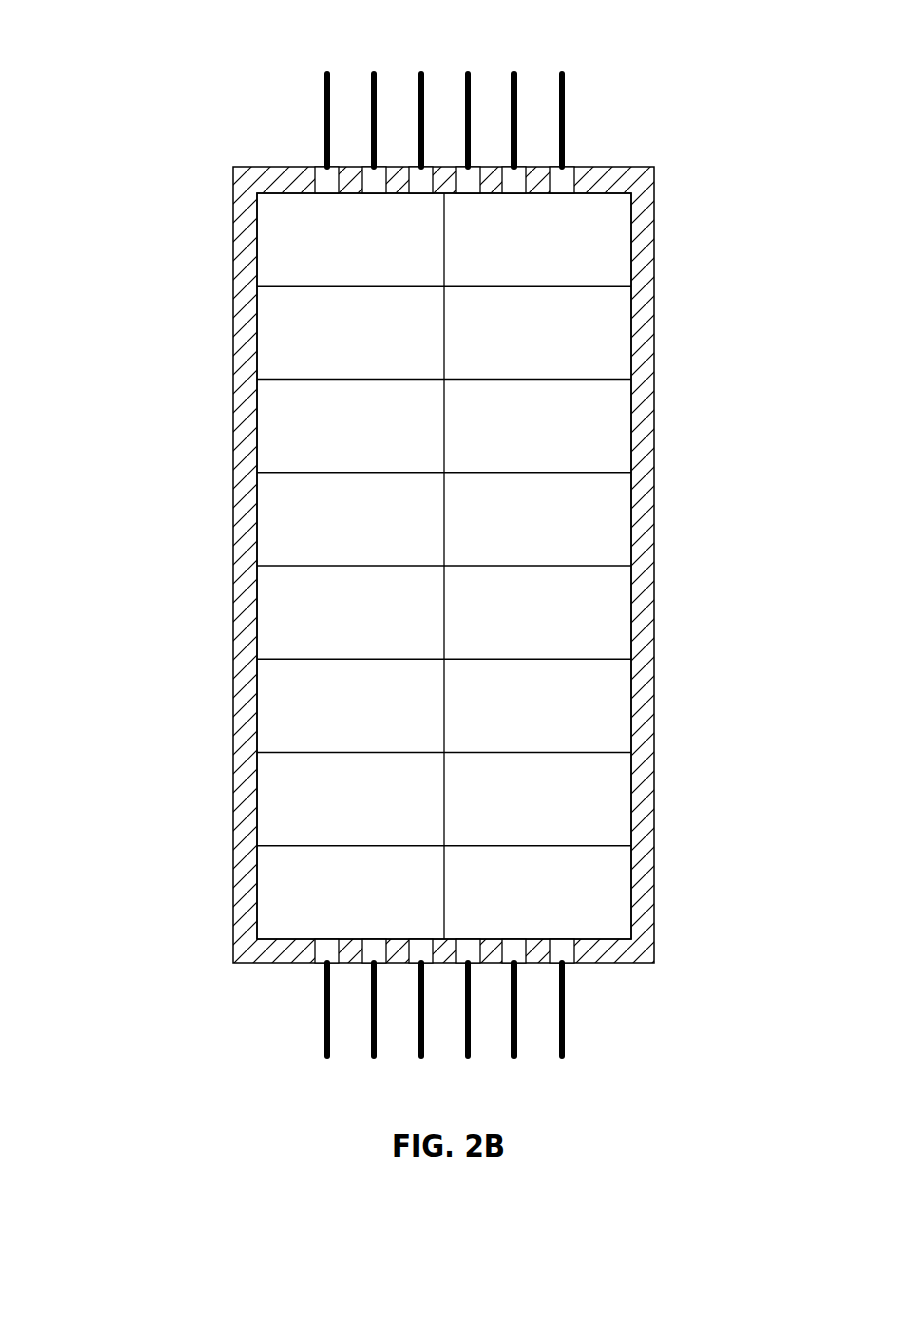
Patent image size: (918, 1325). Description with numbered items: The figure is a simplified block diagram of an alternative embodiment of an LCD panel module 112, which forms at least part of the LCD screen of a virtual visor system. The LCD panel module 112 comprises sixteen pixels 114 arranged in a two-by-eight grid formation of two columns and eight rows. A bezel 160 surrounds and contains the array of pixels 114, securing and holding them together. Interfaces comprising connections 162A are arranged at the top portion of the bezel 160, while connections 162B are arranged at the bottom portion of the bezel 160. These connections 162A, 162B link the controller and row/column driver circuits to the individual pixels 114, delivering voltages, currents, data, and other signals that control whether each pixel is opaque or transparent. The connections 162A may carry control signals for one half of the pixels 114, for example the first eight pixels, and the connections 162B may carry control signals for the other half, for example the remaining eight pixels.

The LCD panel module 112 is at (198, 150).
The pixels 114 is at (272, 407).
The bezel 160 is at (655, 383).
The connections 162A is at (598, 118).
The connections 162B is at (601, 1011).